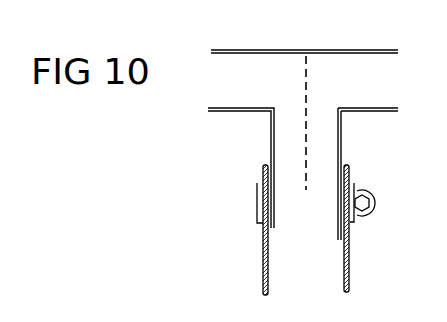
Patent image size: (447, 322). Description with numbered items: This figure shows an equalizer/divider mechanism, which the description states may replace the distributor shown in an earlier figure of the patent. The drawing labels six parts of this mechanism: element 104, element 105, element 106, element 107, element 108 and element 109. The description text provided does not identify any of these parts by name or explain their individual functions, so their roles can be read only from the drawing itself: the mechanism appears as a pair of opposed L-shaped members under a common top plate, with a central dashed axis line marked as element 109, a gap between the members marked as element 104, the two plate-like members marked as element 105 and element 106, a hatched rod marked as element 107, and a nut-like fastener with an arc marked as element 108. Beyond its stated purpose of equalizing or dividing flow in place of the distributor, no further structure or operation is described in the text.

The gap between plates 104 is at (321, 262).
The left plate 105 is at (233, 97).
The right plate 106 is at (385, 97).
The threaded rod 107 is at (262, 258).
The nut 108 is at (376, 193).
The center axis 109 is at (305, 68).